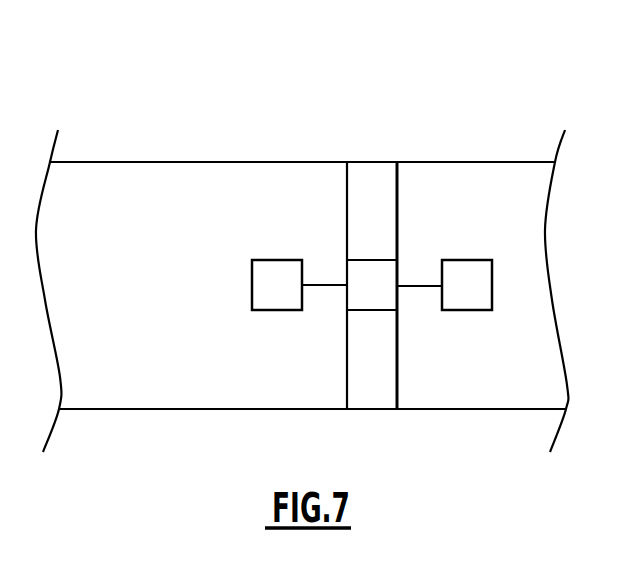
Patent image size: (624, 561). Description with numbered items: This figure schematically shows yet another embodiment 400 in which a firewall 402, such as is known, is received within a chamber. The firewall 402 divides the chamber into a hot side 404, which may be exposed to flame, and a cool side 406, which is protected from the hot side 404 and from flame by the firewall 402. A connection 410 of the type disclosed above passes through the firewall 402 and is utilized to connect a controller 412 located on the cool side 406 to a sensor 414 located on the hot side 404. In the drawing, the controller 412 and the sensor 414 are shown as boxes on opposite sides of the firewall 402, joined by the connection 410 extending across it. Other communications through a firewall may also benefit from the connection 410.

The embodiment 400 is at (405, 104).
The firewall 402 is at (375, 215).
The hot side 404 is at (538, 355).
The cool side 406 is at (118, 355).
The connection 410 is at (337, 306).
The controller 412 is at (281, 268).
The sensor 414 is at (464, 270).